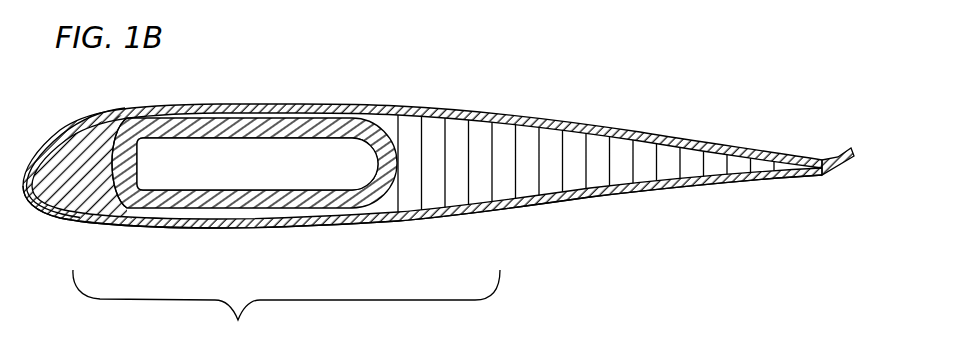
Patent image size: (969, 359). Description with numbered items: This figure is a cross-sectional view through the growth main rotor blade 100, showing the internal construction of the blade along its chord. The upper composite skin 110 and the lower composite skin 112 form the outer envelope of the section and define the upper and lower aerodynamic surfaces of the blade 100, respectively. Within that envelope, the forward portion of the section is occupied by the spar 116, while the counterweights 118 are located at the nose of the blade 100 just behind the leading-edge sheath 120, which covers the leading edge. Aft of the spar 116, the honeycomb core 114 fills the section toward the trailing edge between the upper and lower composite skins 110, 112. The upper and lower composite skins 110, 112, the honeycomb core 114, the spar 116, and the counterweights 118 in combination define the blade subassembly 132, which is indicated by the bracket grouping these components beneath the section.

The main rotor blade 100 is at (438, 166).
The upper composite skin 110 is at (468, 107).
The lower composite skin 112 is at (425, 218).
The honeycomb core 114 is at (640, 156).
The spar 116 is at (388, 122).
The counterweights 118 is at (80, 188).
The leading-edge sheath 120 is at (80, 118).
The blade subassembly 132 is at (286, 313).